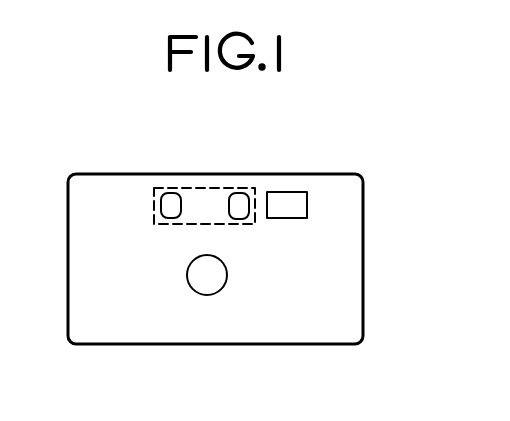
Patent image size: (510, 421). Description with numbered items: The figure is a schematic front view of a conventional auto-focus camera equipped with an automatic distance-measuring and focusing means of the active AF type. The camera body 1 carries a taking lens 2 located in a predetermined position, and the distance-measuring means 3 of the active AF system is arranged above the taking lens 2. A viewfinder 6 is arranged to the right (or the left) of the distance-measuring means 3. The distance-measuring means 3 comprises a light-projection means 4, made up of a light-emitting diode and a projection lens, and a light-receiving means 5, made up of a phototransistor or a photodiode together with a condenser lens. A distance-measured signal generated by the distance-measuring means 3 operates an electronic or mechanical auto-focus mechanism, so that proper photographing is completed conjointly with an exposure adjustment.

The camera body 1 is at (363, 199).
The taking lens 2 is at (212, 285).
The distance-measuring means 3 is at (200, 188).
The light-projection means 4 is at (237, 197).
The light-receiving means 5 is at (169, 196).
The viewfinder 6 is at (282, 192).